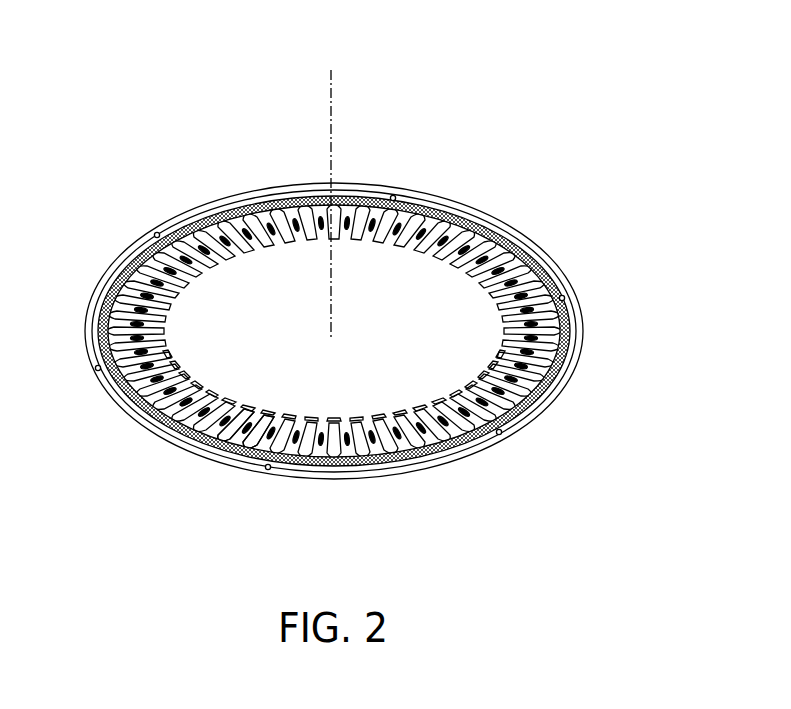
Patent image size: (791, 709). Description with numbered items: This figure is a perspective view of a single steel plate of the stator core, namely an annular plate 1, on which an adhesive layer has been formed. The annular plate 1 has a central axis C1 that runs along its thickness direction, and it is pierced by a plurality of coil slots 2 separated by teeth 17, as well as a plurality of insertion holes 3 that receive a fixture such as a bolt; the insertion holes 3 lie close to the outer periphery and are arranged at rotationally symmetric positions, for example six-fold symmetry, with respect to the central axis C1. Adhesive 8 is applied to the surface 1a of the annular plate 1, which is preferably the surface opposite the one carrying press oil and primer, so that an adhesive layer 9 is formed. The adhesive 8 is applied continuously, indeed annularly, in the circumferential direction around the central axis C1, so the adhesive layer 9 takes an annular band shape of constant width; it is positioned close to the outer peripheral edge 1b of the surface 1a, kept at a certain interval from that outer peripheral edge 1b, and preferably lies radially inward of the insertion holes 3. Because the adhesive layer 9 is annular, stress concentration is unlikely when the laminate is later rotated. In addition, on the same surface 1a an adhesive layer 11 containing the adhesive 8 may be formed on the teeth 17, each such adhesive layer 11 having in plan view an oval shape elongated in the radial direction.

The annular plate 1 is at (334, 361).
The surface 1a is at (437, 462).
The outer peripheral edge 1b is at (372, 476).
The coil slots 2 is at (192, 422).
The insertion holes 3 is at (157, 235).
The adhesive 8 is at (309, 338).
The adhesive layer 9 is at (132, 405).
The adhesive layer 11 is at (193, 390).
The teeth 17 is at (265, 420).
The central axis C1 is at (332, 120).